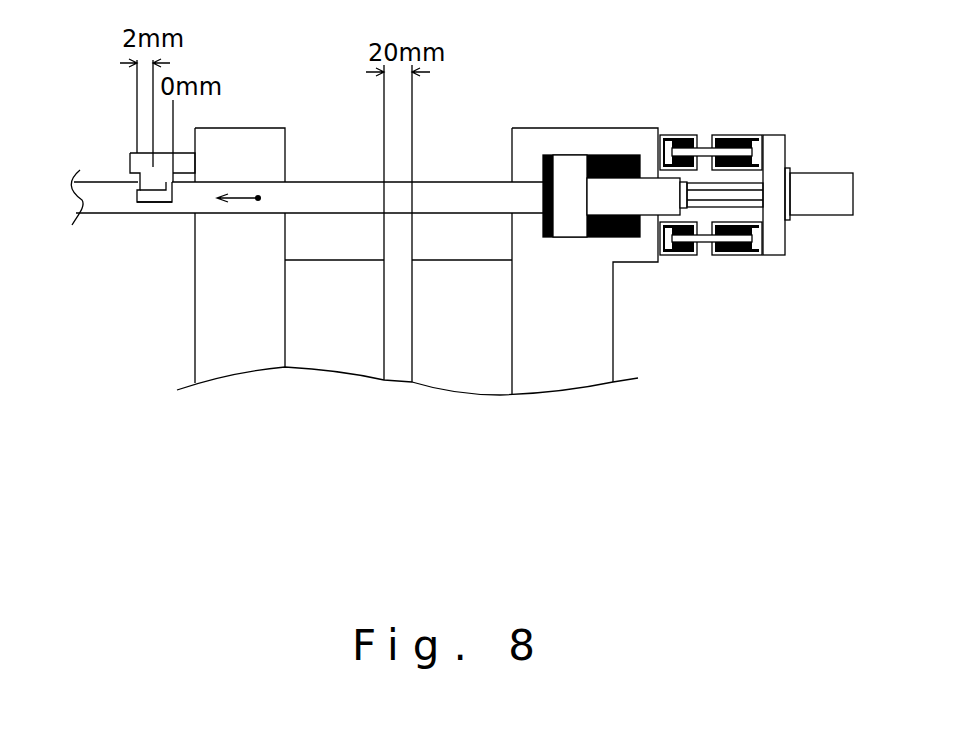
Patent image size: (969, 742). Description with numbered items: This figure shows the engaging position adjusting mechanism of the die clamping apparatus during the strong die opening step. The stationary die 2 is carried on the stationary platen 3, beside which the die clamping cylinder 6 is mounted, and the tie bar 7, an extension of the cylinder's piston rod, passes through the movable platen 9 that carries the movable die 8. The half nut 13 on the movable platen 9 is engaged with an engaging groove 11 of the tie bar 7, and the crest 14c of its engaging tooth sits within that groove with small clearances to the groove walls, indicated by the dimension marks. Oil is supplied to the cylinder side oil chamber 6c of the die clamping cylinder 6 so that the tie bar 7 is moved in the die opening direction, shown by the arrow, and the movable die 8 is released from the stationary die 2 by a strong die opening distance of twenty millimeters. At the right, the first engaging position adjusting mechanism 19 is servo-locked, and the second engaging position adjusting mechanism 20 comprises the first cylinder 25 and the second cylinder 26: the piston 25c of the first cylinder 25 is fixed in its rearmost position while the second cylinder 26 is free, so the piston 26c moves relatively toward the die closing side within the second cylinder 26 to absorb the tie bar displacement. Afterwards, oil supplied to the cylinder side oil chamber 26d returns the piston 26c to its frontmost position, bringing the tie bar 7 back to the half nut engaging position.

The stationary die 2 is at (480, 322).
The stationary platen 3 is at (562, 116).
The die clamping cylinder 6 is at (571, 123).
The cylinder side oil chamber 6c is at (613, 152).
The tie bar 7 is at (322, 197).
The movable die 8 is at (345, 322).
The movable platen 9 is at (270, 143).
The engaging groove 11 is at (180, 193).
The half nut 13 is at (130, 131).
The crest 14c is at (137, 192).
The first engaging position adjusting mechanism 19 is at (853, 158).
The second engaging position adjusting mechanism 20 is at (720, 106).
The first cylinder 25 is at (673, 196).
The piston of the first cylinder 25c is at (667, 245).
The second cylinder 26 is at (763, 206).
The piston of the second cylinder 26c is at (755, 243).
The cylinder side oil chamber of the second cylinder 26d is at (765, 240).